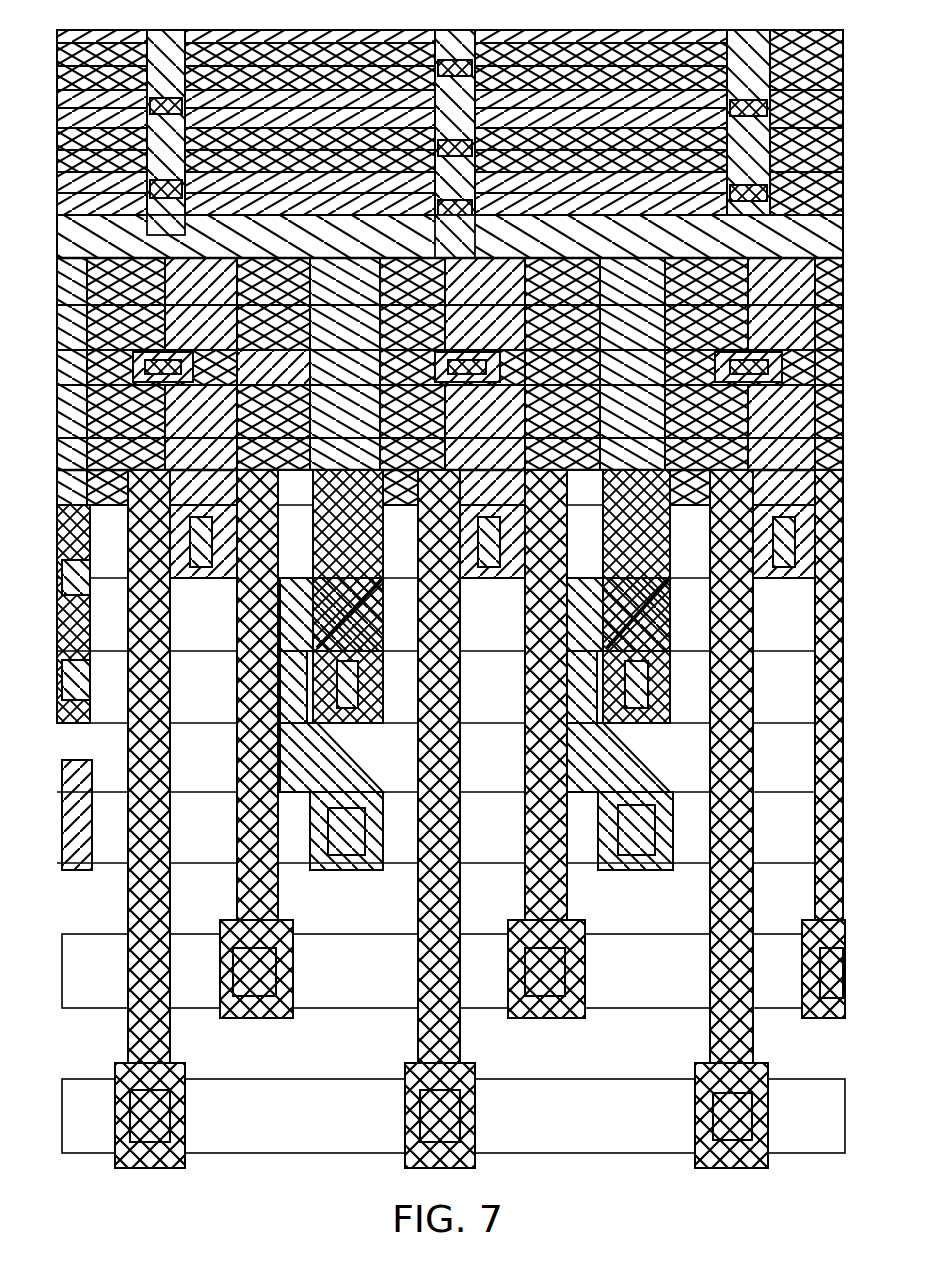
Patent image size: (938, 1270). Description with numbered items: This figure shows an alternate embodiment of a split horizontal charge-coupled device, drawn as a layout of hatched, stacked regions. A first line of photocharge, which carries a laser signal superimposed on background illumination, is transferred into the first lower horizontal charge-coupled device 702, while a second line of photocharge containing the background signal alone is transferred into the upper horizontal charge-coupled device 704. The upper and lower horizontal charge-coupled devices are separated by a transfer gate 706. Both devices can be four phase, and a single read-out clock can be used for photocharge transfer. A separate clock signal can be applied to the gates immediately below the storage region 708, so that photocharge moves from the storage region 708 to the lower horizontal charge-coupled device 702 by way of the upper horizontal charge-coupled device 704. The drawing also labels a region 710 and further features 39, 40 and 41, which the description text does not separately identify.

The bit line 710 is at (70, 249).
The upper horizontal charge-coupled device 704 is at (50, 280).
The first lower horizontal charge-coupled device 702 is at (50, 393).
The transfer gate 706 is at (812, 364).
The storage region 708 is at (147, 490).
The contact 39 is at (300, 352).
The transistor region 40 is at (282, 388).
The transistor region 41 is at (245, 265).